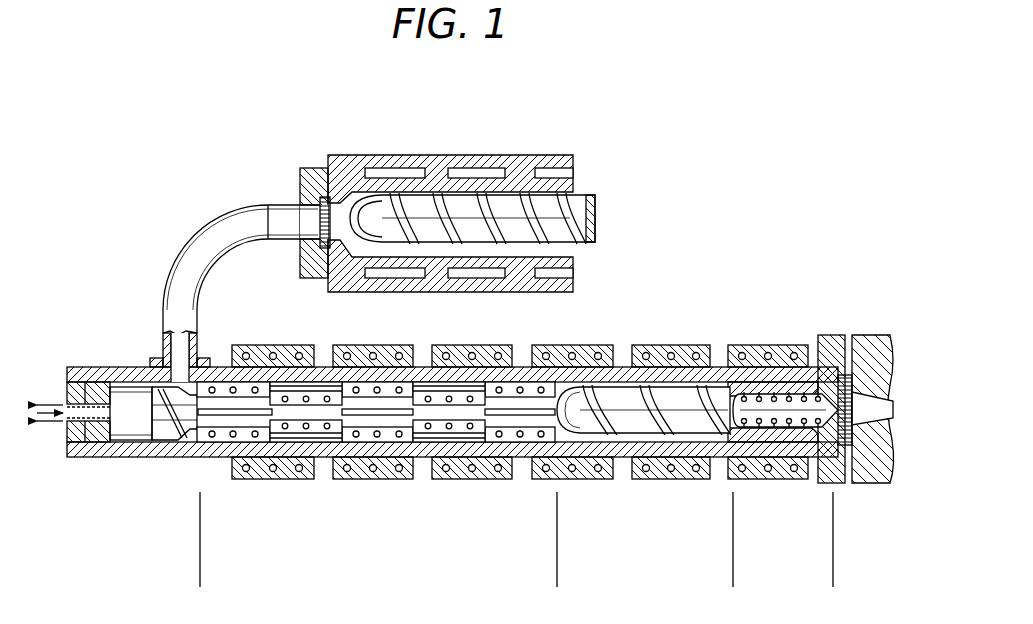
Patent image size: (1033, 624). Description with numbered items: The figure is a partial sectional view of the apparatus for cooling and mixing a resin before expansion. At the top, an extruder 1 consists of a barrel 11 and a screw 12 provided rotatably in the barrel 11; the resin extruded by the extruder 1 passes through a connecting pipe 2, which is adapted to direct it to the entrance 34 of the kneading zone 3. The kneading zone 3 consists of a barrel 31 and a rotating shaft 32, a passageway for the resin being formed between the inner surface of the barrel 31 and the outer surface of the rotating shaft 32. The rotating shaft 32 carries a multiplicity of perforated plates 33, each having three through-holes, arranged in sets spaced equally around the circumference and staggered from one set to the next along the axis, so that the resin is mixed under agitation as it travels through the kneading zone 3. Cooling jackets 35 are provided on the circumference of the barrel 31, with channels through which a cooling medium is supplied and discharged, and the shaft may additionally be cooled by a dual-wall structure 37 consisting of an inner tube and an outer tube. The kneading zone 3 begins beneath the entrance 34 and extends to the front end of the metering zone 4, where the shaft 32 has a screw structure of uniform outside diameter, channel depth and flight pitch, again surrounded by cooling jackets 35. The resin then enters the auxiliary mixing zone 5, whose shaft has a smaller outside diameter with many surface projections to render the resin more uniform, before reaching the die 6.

The extruder 1 is at (520, 140).
The connecting pipe 2 is at (196, 238).
The kneading zone 3 is at (200, 567).
The metering zone 4 is at (557, 567).
The auxiliary mixing zone 5 is at (833, 567).
The die 6 is at (870, 470).
The barrel 11 is at (412, 155).
The screw 12 is at (587, 216).
The barrel 31 is at (322, 458).
The rotating shaft 32 is at (165, 433).
The perforated plates 33 is at (222, 393).
The entrance 34 is at (177, 350).
The cooling jackets 35 is at (430, 345).
The dual-wall structure 37 is at (89, 370).